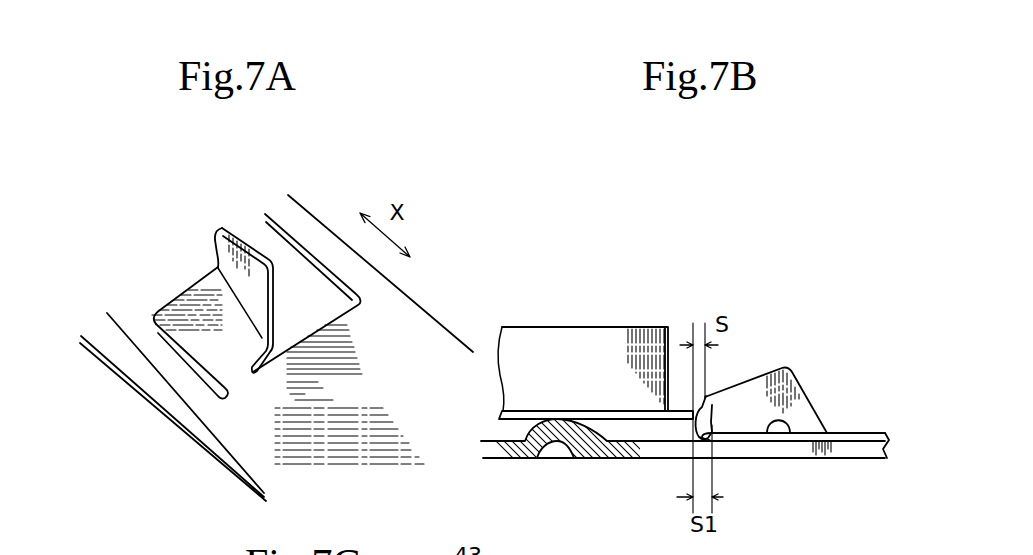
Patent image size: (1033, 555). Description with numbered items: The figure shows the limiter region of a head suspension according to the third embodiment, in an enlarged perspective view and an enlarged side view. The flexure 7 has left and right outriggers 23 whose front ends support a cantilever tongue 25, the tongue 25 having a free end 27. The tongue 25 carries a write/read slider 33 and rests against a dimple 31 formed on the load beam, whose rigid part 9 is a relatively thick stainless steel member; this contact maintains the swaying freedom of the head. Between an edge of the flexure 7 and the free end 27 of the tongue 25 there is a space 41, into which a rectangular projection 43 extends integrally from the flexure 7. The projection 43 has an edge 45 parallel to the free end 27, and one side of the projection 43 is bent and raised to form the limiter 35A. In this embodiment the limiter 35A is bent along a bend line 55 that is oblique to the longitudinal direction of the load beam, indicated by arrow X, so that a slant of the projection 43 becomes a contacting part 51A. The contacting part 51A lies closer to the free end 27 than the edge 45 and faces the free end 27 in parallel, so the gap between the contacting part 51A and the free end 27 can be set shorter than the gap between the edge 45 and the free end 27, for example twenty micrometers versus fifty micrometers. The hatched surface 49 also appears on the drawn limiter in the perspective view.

In FIG. 7A, the flexure 7 is at (390, 333).
In FIG. 7B, the flexure 7 is at (857, 424).
In FIG. 7B, the rigid part 9 is at (628, 459).
In FIG. 7A, the outriggers 23 is at (297, 220).
In FIG. 7B, the tongue 25 is at (603, 410).
In FIG. 7B, the free end 27 is at (695, 405).
In FIG. 7B, the dimple 31 is at (508, 430).
In FIG. 7B, the write/read slider 33 is at (618, 348).
In FIG. 7A, the limiter 35A is at (240, 240).
In FIG. 7B, the limiter 35A is at (760, 382).
In FIG. 7A, the space 41 is at (300, 295).
In FIG. 7A, the projection 43 is at (207, 340).
In FIG. 7B, the projection 43 is at (788, 420).
In FIG. 7A, the edge 45 is at (208, 302).
In FIG. 7B, the edge 45 is at (707, 445).
In FIG. 7A, the hatched surface 49 is at (273, 340).
In FIG. 7A, the contacting part 51A is at (215, 236).
In FIG. 7B, the contacting part 51A is at (698, 430).
In FIG. 7A, the bend line 55 is at (218, 268).